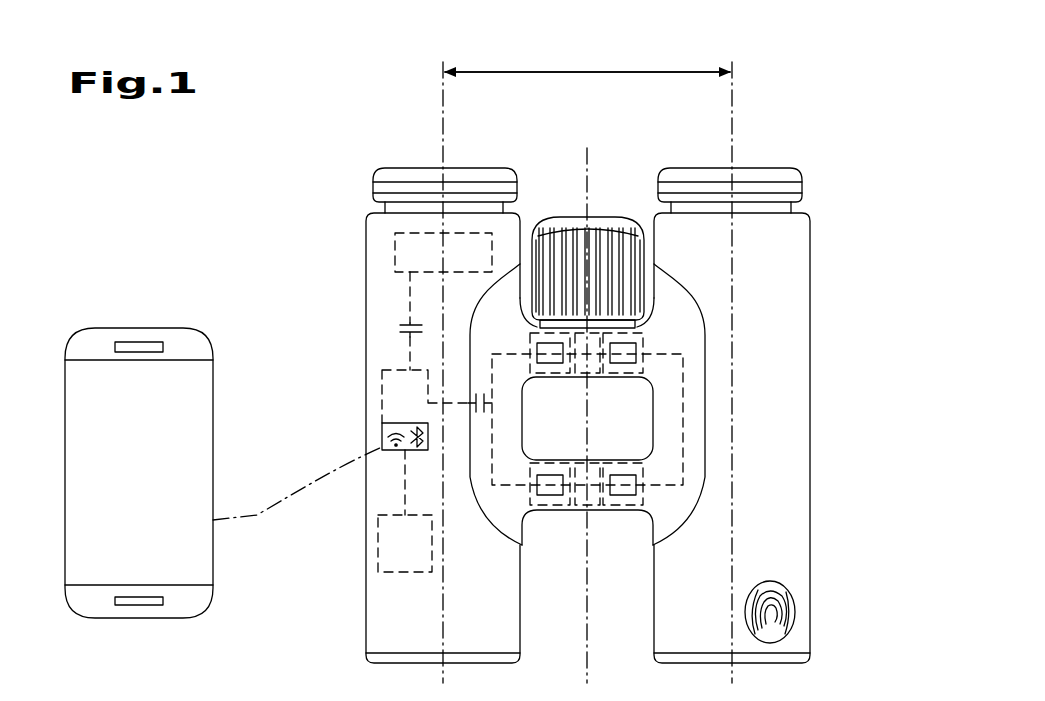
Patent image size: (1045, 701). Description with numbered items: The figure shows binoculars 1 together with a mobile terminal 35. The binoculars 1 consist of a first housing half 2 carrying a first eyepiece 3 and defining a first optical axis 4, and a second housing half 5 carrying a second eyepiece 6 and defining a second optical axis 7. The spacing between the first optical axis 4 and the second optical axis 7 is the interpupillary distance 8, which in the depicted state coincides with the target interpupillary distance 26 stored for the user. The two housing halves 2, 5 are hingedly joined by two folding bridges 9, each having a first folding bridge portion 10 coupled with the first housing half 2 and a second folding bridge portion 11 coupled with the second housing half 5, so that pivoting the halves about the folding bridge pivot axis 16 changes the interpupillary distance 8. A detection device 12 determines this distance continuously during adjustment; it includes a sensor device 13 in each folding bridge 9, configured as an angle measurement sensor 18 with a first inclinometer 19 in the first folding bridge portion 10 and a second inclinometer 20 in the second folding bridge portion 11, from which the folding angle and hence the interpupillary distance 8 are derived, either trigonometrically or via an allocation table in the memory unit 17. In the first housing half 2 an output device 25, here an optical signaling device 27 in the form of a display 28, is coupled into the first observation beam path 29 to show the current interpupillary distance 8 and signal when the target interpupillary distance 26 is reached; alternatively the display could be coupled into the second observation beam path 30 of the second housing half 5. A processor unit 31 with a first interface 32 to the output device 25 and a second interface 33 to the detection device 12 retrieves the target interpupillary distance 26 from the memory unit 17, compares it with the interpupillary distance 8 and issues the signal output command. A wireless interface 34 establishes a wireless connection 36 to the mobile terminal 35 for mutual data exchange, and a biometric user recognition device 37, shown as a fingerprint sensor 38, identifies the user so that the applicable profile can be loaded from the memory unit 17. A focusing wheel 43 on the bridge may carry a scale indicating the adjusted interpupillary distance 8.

The binoculars 1 is at (573, 348).
The first housing half 2 is at (350, 248).
The first eyepiece 3 is at (398, 167).
The first optical axis 4 is at (396, 351).
The first observation beam path 29 is at (441, 98).
The second housing half 5 is at (806, 250).
The second eyepiece 6 is at (770, 167).
The second optical axis 7 is at (783, 348).
The second observation beam path 30 is at (734, 98).
The interpupillary distance 8 is at (587, 43).
The target interpupillary distance 26 is at (594, 70).
The folding bridge 9 is at (626, 335).
The first folding bridge portion 10 is at (472, 362).
The second folding bridge portion 11 is at (647, 368).
The detection device 12 is at (670, 440).
The sensor device 13 is at (587, 418).
The angle measurement sensor 18 is at (620, 374).
The folding bridge pivot axis 16 is at (591, 176).
The memory unit 17 is at (395, 542).
The first inclinometer 19 is at (552, 364).
The second inclinometer 20 is at (637, 347).
The output device 25 is at (364, 198).
The signaling device 27 is at (364, 198).
The display 28 is at (393, 231).
The processor unit 31 is at (379, 369).
The first interface 32 is at (395, 320).
The second interface 33 is at (477, 414).
The wireless interface 34 is at (382, 436).
The mobile terminal 35 is at (137, 310).
The wireless connection 36 is at (257, 515).
The user recognition device 37 is at (829, 615).
The fingerprint sensor 38 is at (797, 613).
The focusing wheel 43 is at (562, 215).